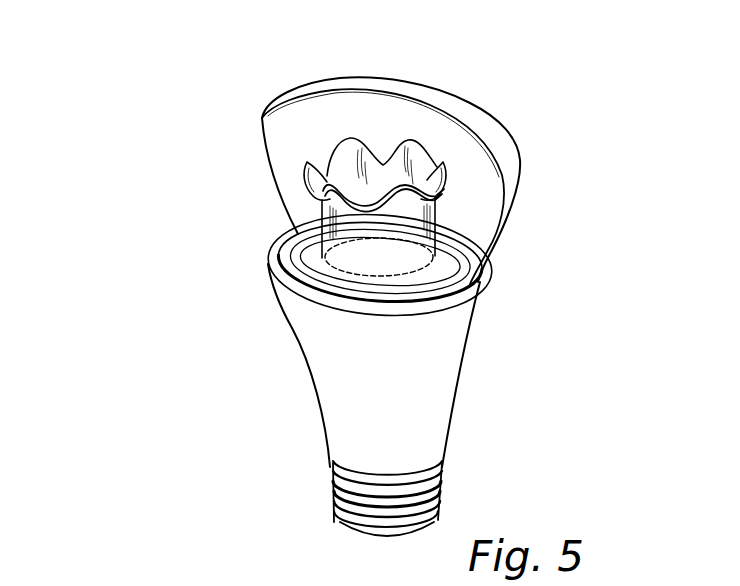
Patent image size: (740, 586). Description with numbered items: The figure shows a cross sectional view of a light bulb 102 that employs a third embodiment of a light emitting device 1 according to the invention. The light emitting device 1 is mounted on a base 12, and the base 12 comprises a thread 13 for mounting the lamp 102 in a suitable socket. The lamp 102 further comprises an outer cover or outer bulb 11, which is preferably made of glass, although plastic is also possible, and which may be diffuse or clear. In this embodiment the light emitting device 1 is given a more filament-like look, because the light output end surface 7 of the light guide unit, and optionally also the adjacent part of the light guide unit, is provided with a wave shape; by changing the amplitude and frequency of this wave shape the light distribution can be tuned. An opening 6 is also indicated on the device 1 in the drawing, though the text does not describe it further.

The light bulb 102 is at (181, 250).
The outer cover 11 is at (452, 122).
The light output end surface 7 is at (444, 168).
The opening 6 is at (393, 247).
The light emitting device 1 is at (470, 270).
The base 12 is at (340, 405).
The thread 13 is at (356, 505).